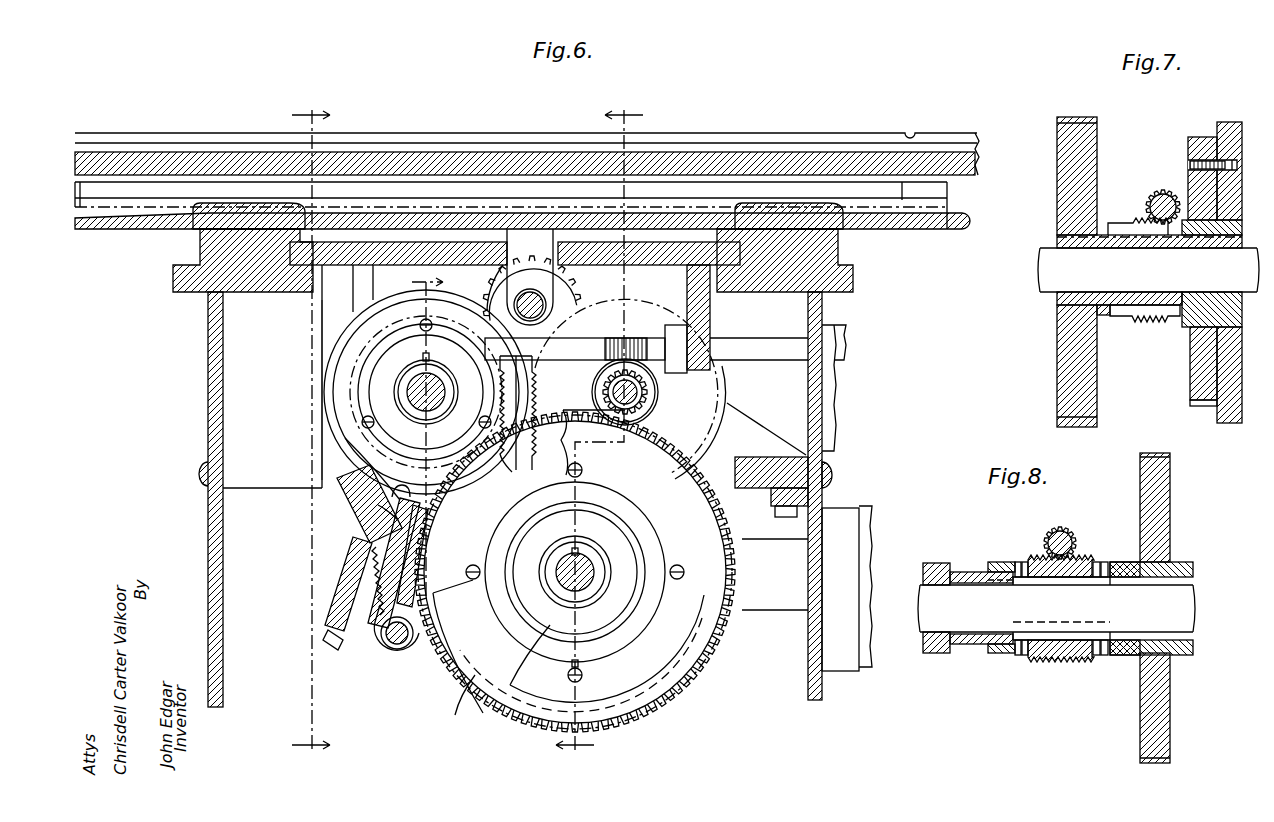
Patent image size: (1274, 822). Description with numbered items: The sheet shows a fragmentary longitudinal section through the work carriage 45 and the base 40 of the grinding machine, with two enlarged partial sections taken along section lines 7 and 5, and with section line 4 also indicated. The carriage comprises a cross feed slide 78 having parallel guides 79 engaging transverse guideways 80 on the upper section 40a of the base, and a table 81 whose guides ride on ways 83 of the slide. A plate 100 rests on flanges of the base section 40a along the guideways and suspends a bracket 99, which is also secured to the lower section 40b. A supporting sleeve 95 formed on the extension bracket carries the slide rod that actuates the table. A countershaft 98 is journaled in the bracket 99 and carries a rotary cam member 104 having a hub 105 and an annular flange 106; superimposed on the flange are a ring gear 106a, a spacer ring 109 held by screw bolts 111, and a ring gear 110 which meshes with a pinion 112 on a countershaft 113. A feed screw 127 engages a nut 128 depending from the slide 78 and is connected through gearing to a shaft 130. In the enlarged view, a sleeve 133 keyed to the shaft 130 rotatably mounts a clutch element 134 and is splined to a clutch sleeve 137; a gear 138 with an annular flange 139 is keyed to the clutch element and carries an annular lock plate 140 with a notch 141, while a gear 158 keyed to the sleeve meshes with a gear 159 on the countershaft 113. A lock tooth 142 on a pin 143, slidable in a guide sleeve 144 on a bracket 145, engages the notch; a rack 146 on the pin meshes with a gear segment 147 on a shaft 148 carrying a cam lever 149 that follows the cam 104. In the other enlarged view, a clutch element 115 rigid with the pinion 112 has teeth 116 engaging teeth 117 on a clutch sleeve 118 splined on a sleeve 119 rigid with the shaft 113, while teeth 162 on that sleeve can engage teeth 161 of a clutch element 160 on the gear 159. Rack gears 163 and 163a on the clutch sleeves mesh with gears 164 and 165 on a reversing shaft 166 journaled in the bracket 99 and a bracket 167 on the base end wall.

In FIG. 6, the main longitudinal traverse slide or table 81 is at (168, 134).
In FIG. 6, the work carriage 45 is at (990, 142).
In FIG. 6, the ways 83 is at (125, 215).
In FIG. 6, the parallel guides 79 is at (240, 237).
In FIG. 6, the transverse guideways 80 is at (270, 292).
In FIG. 6, the base 40 is at (494, 486).
In FIG. 6, the plate 100 is at (440, 253).
In FIG. 6, the cross feed slide 78 is at (530, 277).
In FIG. 6, the bracket 99 is at (320, 318).
In FIG. 6, the reversing shaft 166 is at (758, 348).
In FIG. 6, the gear 164 is at (632, 340).
In FIG. 8, the gear 164 is at (1060, 528).
In FIG. 6, the bracket 167 is at (838, 392).
In FIG. 6, the upper section of the base 40a is at (833, 471).
In FIG. 6, the lower section of the base 40b is at (823, 561).
In FIG. 6, the supporting sleeve 95 is at (772, 605).
In FIG. 6, the ring gear 110 is at (695, 428).
In FIG. 6, the gear 159 is at (608, 300).
In FIG. 8, the gear 159 is at (1158, 732).
In FIG. 6, the section line 4- 4 is at (311, 435).
In FIG. 6, the section line 5- 5 is at (599, 433).
In FIG. 6, the section line 7- 7 is at (427, 430).
In FIG. 6, the annular lock plate 140 is at (335, 366).
In FIG. 7, the annular lock plate 140 is at (1232, 415).
In FIG. 6, the shaft 130 is at (417, 392).
In FIG. 7, the shaft 130 is at (1062, 272).
In FIG. 6, the gear 158 is at (520, 412).
In FIG. 7, the gear 158 is at (1090, 410).
In FIG. 6, the feed screw 127 is at (545, 305).
In FIG. 6, the nut 128 is at (545, 287).
In FIG. 6, the pinion 112 is at (652, 385).
In FIG. 8, the pinion 112 is at (968, 570).
In FIG. 6, the countershaft 113 is at (592, 380).
In FIG. 8, the countershaft 113 is at (935, 612).
In FIG. 6, the rotary cam member 104 is at (610, 525).
In FIG. 6, the annular flange 106 is at (632, 628).
In FIG. 6, the hub 105 is at (595, 560).
In FIG. 6, the countershaft 98 is at (553, 580).
In FIG. 6, the screw bolts 111 is at (580, 471).
In FIG. 6, the spacer ring 109 is at (492, 700).
In FIG. 6, the ring gear 106a is at (433, 677).
In FIG. 6, the bracket 145 is at (340, 472).
In FIG. 6, the notch 141 is at (342, 442).
In FIG. 6, the pin 143 is at (365, 536).
In FIG. 6, the guide sleeve 144 is at (322, 584).
In FIG. 6, the cam lever 149 is at (415, 560).
In FIG. 6, the lock tooth 142 is at (370, 518).
In FIG. 6, the shaft 148 is at (393, 655).
In FIG. 6, the gear segment 147 is at (365, 645).
In FIG. 6, the longitudinal gear rack 146 is at (328, 638).
In FIG. 7, the sleeve 133 is at (1075, 308).
In FIG. 7, the clutch sleeve 137 is at (1145, 322).
In FIG. 7, the clutch element 134 is at (1202, 320).
In FIG. 7, the annular flange 139 is at (1205, 360).
In FIG. 7, the gear 138 is at (1205, 392).
In FIG. 7, the gear 165 is at (1168, 192).
In FIG. 7, the longitudinal rack gear 163a is at (1138, 222).
In FIG. 8, the sleeve 119 is at (1045, 583).
In FIG. 8, the clutch element 115 is at (993, 655).
In FIG. 8, the clutch teeth 116 is at (1017, 662).
In FIG. 8, the clutch teeth 117 is at (1025, 665).
In FIG. 8, the clutch sleeve 118 is at (1047, 660).
In FIG. 8, the clutch teeth 162 is at (1097, 562).
In FIG. 8, the teeth 161 is at (1106, 562).
In FIG. 8, the clutch element 160 is at (1126, 655).
In FIG. 8, the longitudinal rack gear 163 is at (1090, 660).